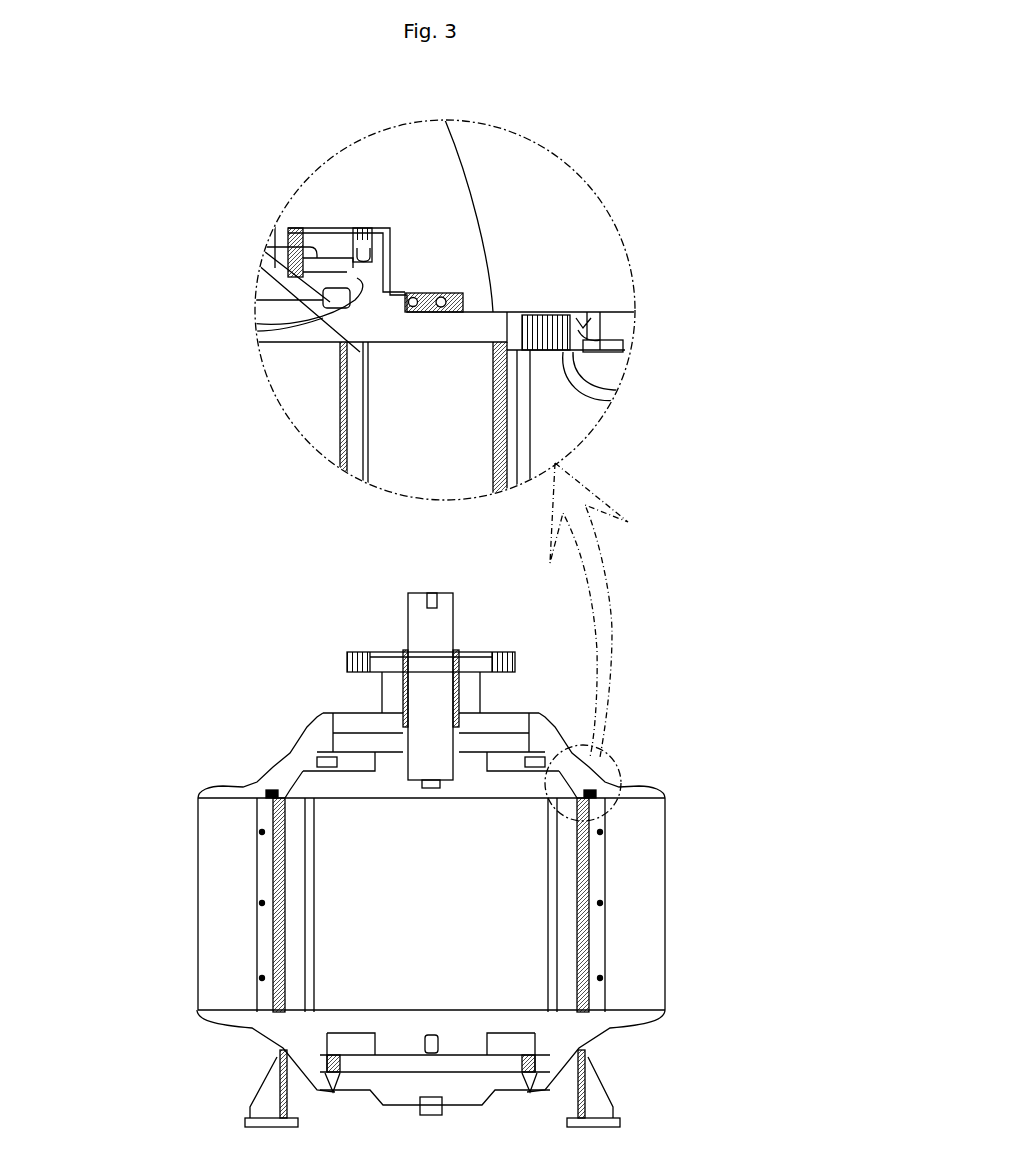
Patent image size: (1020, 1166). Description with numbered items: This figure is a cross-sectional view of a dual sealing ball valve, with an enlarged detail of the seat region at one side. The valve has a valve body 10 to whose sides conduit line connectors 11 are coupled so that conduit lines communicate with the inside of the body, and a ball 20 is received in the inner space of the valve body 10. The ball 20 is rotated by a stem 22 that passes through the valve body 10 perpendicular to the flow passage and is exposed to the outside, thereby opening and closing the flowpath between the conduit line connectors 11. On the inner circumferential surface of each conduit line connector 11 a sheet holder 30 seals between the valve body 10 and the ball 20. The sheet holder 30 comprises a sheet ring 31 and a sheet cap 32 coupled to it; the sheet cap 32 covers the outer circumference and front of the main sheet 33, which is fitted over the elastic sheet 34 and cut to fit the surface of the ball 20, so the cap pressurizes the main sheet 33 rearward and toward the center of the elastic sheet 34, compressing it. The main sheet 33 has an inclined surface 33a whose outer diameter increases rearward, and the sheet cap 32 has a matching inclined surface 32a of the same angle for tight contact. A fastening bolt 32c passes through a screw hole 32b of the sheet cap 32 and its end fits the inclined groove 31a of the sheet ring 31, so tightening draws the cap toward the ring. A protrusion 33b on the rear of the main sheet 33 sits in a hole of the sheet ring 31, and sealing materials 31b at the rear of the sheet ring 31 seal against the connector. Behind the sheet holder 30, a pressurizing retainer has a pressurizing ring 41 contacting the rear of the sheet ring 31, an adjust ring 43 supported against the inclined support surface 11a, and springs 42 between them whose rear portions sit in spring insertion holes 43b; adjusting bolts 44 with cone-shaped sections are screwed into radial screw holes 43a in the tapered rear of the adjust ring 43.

The valve body 10 is at (372, 725).
The conduit line connector 11 is at (488, 200).
The support surface 11a is at (603, 323).
The ball 20 is at (272, 290).
The stem 22 is at (405, 617).
The sheet holder 30 is at (412, 378).
The sheet ring 31 is at (395, 327).
The groove 31a is at (324, 242).
The sealing materials 31b is at (493, 312).
The sheet cap 32 is at (315, 247).
The inclined surface 32a is at (233, 228).
The inclined surface 33a is at (290, 273).
The screw holes 32b is at (356, 256).
The fastening bolt 32c is at (366, 238).
The main sheet 33 is at (288, 292).
The protrusion 33b is at (337, 312).
The elastic sheet 34 is at (310, 326).
The pressurizing ring 41 is at (520, 312).
The springs 42 is at (547, 317).
The adjust ring 43 is at (577, 318).
The screw holes 43a is at (597, 392).
The spring insertion holes 43b is at (570, 380).
The adjusting bolts 44 is at (597, 355).